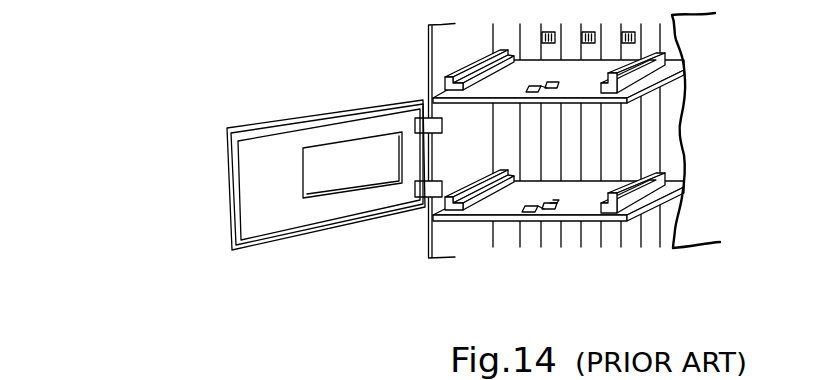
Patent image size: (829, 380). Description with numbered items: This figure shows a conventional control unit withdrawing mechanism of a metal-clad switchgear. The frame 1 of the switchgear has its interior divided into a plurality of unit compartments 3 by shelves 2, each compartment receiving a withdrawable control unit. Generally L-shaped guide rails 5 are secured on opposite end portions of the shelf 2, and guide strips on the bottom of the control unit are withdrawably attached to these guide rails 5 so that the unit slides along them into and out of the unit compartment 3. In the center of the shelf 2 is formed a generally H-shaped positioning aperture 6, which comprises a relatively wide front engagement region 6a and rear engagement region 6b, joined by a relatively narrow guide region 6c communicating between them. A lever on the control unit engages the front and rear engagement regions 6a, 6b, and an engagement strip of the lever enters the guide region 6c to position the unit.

The frame 1 is at (414, 48).
The shelf 2 is at (642, 80).
The unit compartment 3 is at (438, 206).
The guide rail 5 is at (658, 188).
The positioning aperture 6 is at (540, 239).
The front engagement region 6a is at (523, 206).
The rear engagement region 6b is at (557, 202).
The guide region 6c is at (547, 208).